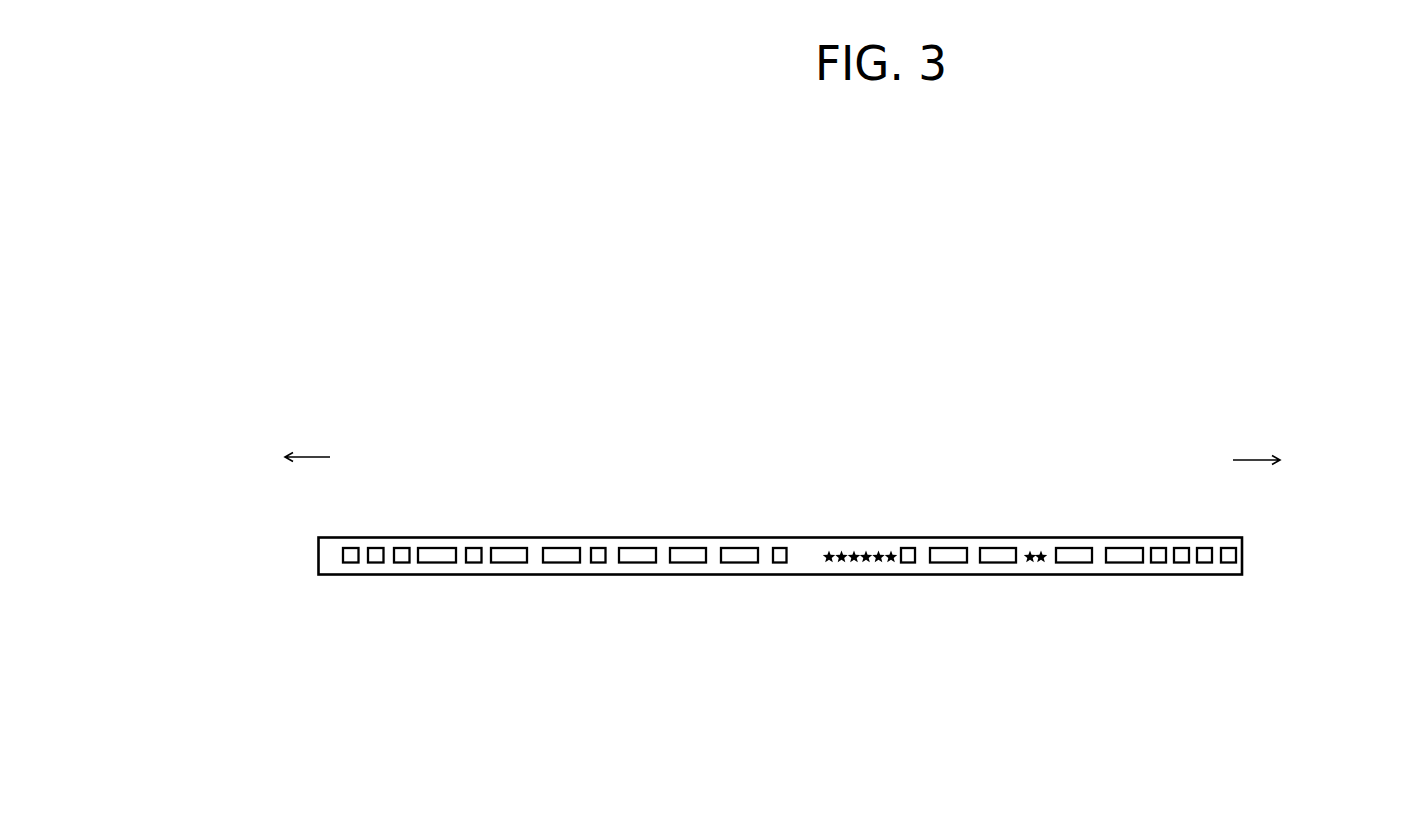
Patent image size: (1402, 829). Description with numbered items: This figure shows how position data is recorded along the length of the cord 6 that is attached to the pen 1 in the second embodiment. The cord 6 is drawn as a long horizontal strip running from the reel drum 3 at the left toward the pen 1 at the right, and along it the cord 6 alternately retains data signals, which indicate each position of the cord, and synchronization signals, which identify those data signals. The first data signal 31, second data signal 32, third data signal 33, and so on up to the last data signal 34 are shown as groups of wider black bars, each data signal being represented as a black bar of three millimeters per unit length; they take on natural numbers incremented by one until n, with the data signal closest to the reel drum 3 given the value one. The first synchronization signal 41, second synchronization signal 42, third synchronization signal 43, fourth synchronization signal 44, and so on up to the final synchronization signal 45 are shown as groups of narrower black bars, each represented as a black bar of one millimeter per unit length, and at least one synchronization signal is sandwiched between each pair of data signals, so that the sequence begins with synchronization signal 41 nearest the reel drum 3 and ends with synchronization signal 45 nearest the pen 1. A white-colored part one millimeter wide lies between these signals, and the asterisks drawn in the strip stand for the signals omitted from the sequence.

The pen 1 is at (1305, 461).
The reel drum 3 is at (213, 456).
The cord 6 is at (877, 575).
The data signal (1) 31 is at (417, 526).
The data signal (2) 32 is at (580, 525).
The data signal (3) 33 is at (618, 527).
The data signal (n−1) 34 is at (945, 518).
The synchronization signal (1) 41 is at (408, 592).
The synchronization signal (2) 42 is at (478, 594).
The synchronization signal (3) 43 is at (610, 594).
The synchronization signal (4) 44 is at (787, 596).
The synchronization signal (n) 45 is at (1237, 593).